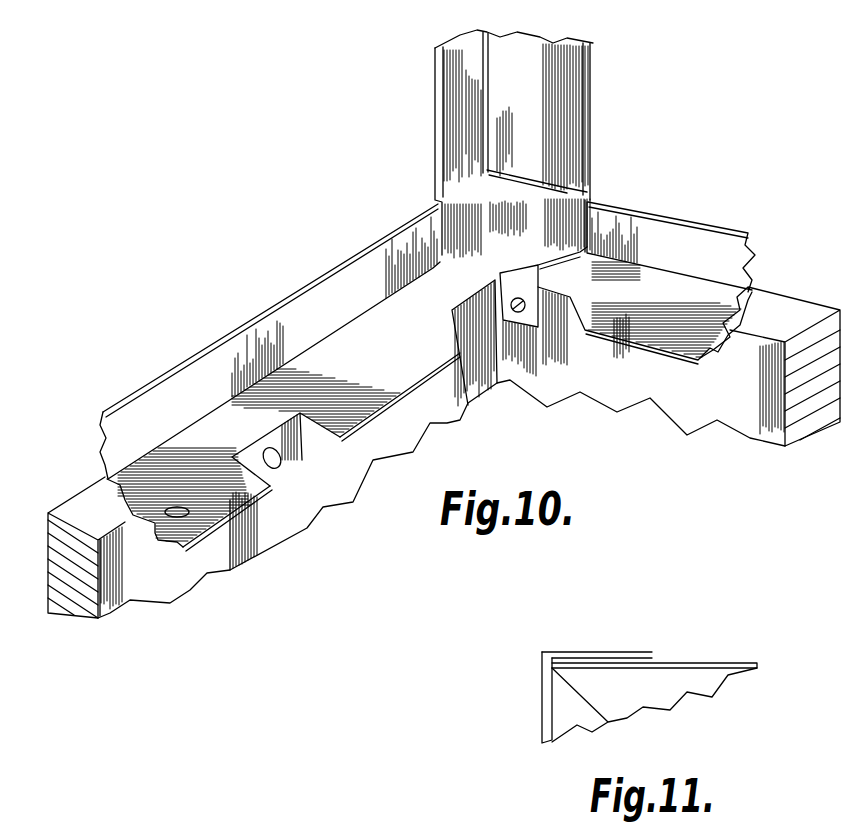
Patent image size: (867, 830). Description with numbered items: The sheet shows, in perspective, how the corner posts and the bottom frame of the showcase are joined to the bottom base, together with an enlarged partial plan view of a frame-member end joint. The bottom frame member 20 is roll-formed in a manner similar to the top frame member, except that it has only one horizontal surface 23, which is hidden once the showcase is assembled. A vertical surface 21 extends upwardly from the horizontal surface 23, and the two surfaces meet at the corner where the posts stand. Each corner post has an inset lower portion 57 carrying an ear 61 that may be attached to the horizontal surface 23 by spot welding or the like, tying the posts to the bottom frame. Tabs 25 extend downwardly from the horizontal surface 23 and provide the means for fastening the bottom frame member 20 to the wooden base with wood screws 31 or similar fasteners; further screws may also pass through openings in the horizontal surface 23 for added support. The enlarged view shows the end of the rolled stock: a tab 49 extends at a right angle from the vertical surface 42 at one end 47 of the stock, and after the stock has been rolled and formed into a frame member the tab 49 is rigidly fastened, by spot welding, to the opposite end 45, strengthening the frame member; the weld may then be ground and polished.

In FIG. 10, the bottom frame member 20 is at (168, 374).
In FIG. 10, the vertical surface 21 is at (378, 262).
In FIG. 10, the horizontal surface 23 is at (187, 553).
In FIG. 10, the tabs 25 is at (305, 455).
In FIG. 10, the wood screws 31 is at (276, 469).
In FIG. 10, the lower portion 57 is at (595, 213).
In FIG. 10, the ear 61 is at (586, 272).
In FIG. 11, the vertical surface 42 is at (540, 736).
In FIG. 11, the opposite end 45 is at (710, 660).
In FIG. 11, the one end 47 is at (540, 698).
In FIG. 11, the tab 49 is at (592, 655).